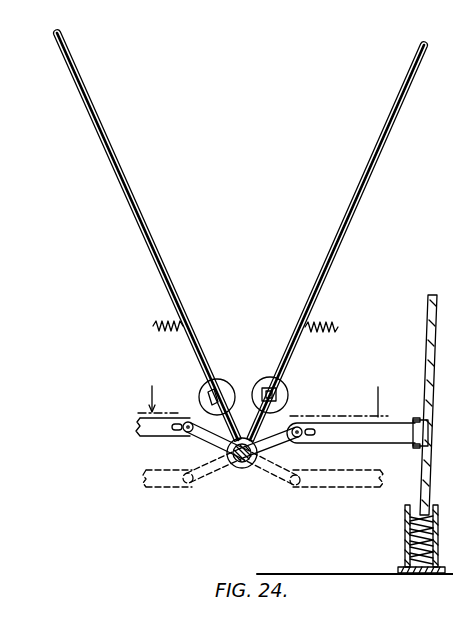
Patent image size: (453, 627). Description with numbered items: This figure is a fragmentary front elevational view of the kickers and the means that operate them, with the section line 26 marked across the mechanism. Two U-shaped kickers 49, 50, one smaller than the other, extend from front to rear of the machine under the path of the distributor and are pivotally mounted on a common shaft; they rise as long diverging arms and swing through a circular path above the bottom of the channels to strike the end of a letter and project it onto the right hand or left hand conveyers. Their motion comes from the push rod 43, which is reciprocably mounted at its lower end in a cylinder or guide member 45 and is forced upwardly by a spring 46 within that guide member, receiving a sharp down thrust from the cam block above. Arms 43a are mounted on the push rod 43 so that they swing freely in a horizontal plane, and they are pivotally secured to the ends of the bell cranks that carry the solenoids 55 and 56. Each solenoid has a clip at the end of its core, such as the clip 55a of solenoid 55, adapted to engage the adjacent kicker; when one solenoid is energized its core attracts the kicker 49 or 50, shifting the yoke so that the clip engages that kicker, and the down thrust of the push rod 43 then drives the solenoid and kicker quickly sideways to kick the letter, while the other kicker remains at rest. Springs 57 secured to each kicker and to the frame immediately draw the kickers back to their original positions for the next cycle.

The section line 26 is at (263, 402).
The push rod 43 is at (419, 458).
The arms 43a is at (153, 430).
The cylinder or guide member 45 is at (405, 513).
The spring 46 is at (407, 536).
The kicker 49 is at (150, 239).
The kicker 50 is at (335, 242).
The solenoid 55 is at (204, 385).
The clip 55a is at (228, 381).
The solenoid 56 is at (286, 388).
The springs 57 is at (180, 323).